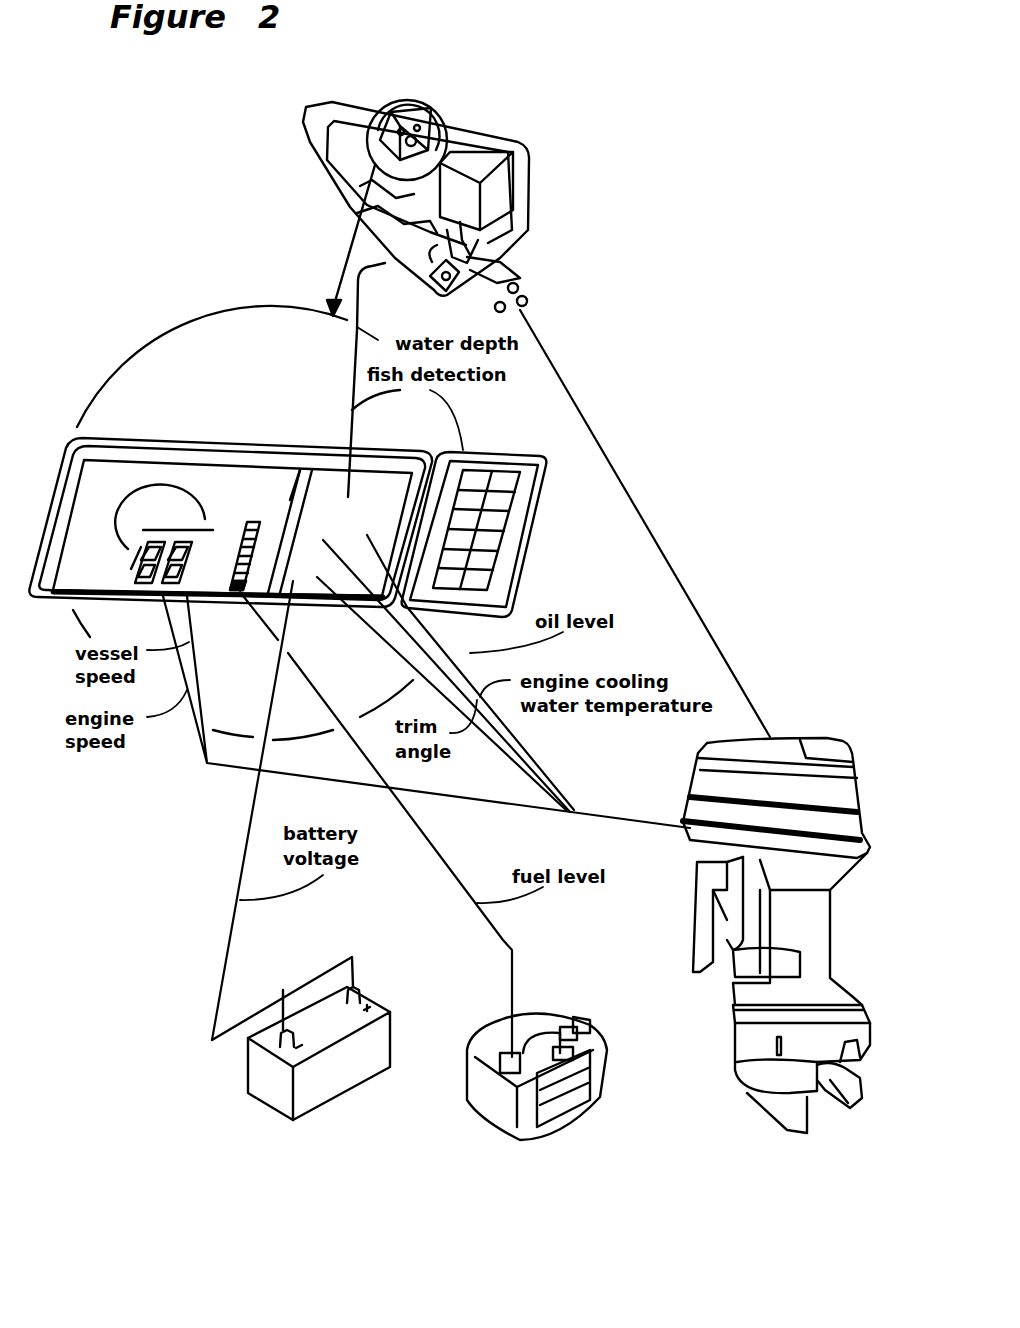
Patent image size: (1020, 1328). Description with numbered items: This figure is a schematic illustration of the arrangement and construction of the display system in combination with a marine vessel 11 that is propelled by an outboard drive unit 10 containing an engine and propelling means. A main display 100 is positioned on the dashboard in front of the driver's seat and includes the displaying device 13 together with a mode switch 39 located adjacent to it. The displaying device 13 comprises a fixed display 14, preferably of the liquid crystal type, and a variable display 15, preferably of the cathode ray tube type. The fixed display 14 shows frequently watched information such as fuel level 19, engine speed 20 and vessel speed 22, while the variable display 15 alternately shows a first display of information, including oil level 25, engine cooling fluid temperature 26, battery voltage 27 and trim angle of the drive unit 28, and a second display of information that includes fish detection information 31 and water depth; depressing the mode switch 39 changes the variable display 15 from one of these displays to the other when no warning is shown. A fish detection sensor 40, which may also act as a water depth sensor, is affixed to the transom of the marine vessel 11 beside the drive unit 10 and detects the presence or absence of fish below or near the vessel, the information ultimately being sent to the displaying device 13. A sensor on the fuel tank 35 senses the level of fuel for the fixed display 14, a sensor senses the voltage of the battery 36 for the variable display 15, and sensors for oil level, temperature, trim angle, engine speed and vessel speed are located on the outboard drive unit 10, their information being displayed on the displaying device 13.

The outboard drive unit 10 is at (510, 197).
The marine vessel 11 is at (513, 137).
The displaying device 13 is at (230, 353).
The fixed display 14 is at (130, 470).
The variable display 15 is at (313, 483).
The fuel level 19 is at (226, 600).
The engine speed 20 is at (148, 542).
The vessel speed 22 is at (182, 575).
The oil level 25 is at (453, 665).
The engine cooling fluid temperature 26 is at (431, 666).
The battery voltage 27 is at (259, 799).
The trim angle of the drive unit 28 is at (436, 682).
The fish detection information 31 is at (374, 387).
The fuel tank 35 is at (598, 1084).
The battery 36 is at (337, 1082).
The mode switch 39 is at (548, 457).
The fish detection sensor 40 is at (455, 292).
The main display 100 is at (427, 113).